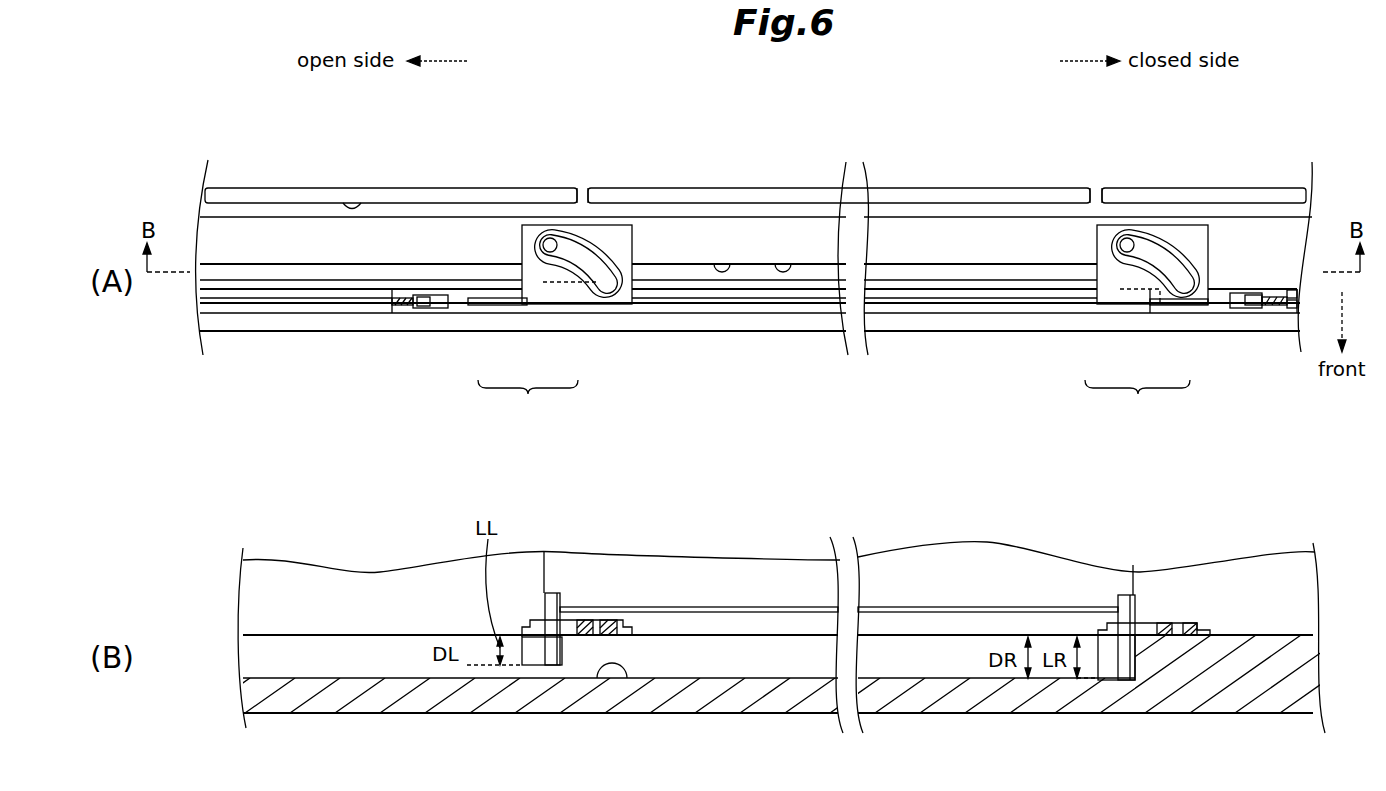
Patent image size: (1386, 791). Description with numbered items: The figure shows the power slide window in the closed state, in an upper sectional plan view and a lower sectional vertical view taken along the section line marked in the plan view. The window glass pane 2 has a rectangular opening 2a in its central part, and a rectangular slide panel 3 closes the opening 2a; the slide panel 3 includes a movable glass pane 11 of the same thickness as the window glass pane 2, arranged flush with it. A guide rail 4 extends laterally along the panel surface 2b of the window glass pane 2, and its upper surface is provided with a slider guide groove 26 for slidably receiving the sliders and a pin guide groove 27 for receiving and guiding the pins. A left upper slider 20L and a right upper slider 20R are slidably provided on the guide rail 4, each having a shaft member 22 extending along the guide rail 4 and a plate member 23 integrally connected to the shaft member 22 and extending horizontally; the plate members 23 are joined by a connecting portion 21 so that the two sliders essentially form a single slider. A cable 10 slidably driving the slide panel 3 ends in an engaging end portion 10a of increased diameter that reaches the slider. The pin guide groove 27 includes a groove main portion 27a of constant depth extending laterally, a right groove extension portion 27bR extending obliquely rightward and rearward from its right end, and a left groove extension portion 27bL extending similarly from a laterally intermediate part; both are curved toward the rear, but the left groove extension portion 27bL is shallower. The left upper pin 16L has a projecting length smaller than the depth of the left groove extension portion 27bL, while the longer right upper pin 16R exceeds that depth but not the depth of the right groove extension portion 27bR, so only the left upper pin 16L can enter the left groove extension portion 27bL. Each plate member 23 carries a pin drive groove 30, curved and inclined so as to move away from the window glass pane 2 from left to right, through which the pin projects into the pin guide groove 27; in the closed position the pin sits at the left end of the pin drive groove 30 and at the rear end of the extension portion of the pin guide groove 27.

The window glass pane 2 is at (258, 188).
The opening 2a is at (583, 190).
The panel surface 2b is at (352, 207).
The slide panel 3 is at (968, 188).
The guide rail 4 is at (1303, 245).
The cable 10 is at (300, 306).
The engaging end portion 10a is at (425, 294).
The movable glass pane 11 is at (906, 190).
The left upper pin 16L is at (550, 240).
The right upper pin 16R is at (1130, 240).
The left upper slider 20L is at (528, 402).
The right upper slider 20R is at (1137, 402).
The connecting portion 21 is at (707, 306).
The shaft member 22 is at (496, 306).
The plate member 23 is at (568, 302).
The slider guide groove 26 is at (940, 312).
The pin guide groove 27 is at (722, 266).
The groove main portion 27a is at (788, 266).
The left groove extension portion 27bL is at (530, 248).
The right groove extension portion 27bR is at (1105, 248).
The pin drive groove 30 is at (598, 250).